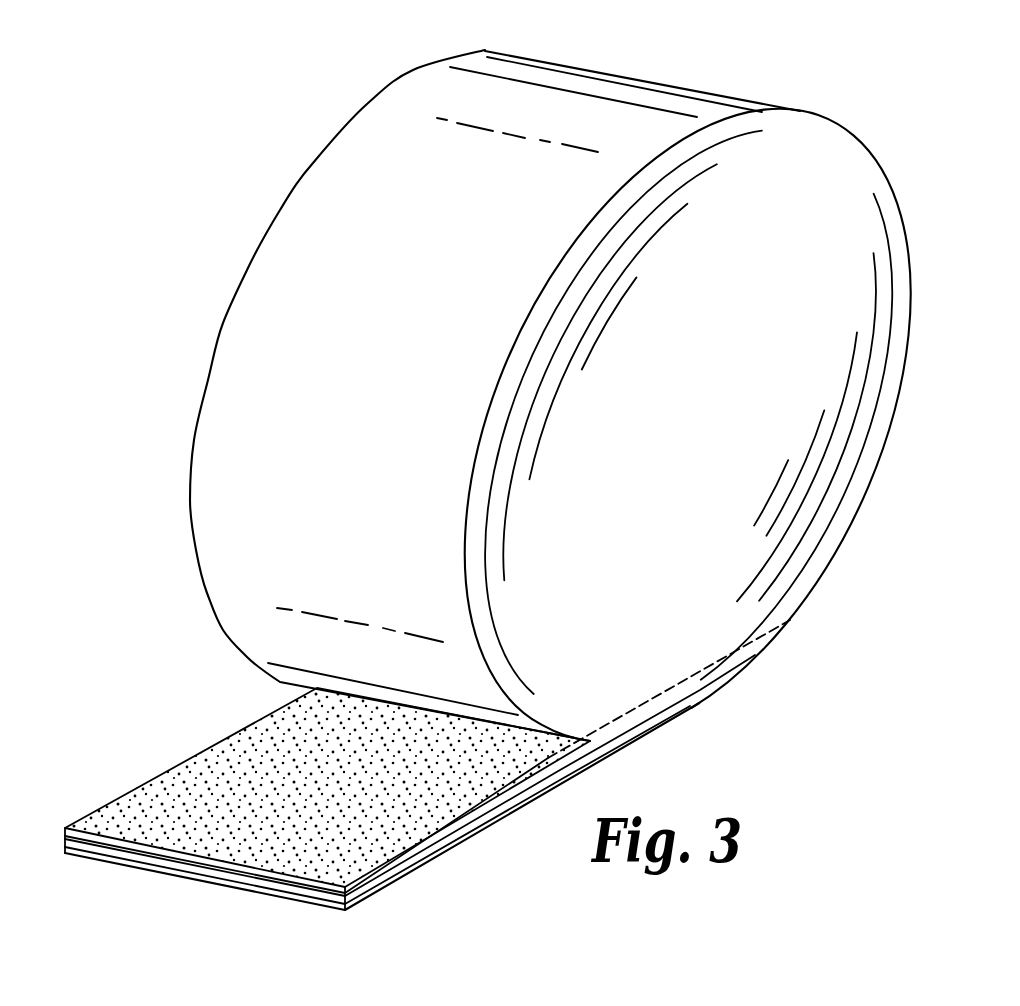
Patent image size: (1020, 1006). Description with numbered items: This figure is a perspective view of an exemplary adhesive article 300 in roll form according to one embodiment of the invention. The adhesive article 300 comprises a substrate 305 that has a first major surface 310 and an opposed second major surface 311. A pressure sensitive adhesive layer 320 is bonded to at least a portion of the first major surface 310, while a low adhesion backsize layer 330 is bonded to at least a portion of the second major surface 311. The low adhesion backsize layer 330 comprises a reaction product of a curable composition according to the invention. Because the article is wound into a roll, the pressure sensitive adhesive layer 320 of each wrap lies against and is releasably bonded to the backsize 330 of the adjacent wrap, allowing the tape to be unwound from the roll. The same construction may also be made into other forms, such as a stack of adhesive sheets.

The adhesive article 300 is at (164, 676).
The substrate 305 is at (194, 866).
The first major surface 310 is at (288, 872).
The second major surface 311 is at (324, 910).
The pressure sensitive adhesive layer 320 is at (188, 797).
The low adhesion backsize layer 330 is at (134, 871).